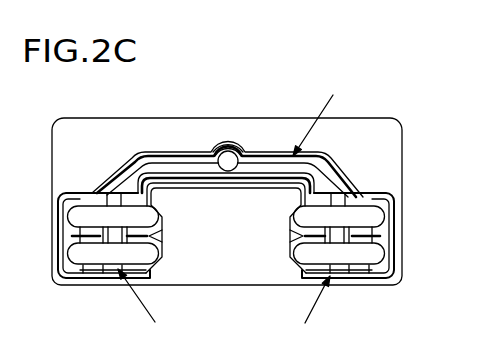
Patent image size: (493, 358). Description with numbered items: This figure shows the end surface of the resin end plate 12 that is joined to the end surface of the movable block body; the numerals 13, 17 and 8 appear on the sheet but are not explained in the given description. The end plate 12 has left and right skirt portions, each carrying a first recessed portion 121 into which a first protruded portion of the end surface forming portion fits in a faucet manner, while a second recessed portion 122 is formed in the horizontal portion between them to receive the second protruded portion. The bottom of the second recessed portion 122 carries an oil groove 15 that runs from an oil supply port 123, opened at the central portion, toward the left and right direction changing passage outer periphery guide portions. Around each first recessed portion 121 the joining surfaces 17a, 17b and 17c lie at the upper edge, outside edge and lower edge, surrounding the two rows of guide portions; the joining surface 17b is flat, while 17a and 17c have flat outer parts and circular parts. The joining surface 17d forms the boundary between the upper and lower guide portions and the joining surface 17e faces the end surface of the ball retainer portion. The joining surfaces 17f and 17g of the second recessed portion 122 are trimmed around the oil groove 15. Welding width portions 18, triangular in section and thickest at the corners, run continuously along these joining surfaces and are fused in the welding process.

The end plate 12 is at (388, 118).
The substrate 13 is at (13, 256).
The contact terminal 17 is at (10, 171).
The oil groove 15 is at (193, 164).
The welding width portion 18 is at (157, 178).
The oil supply port 123 is at (222, 146).
The second recessed portion 122 is at (335, 115).
The first recessed portion 121 is at (224, 310).
The joining surface 17a is at (97, 192).
The joining surface 17b is at (57, 258).
The joining surface 17c is at (102, 278).
The joining surface 17d is at (128, 240).
The joining surface 17e is at (163, 237).
The joining surface 17f is at (268, 155).
The joining surface 17g is at (265, 188).
The slot 8 is at (65, 216).